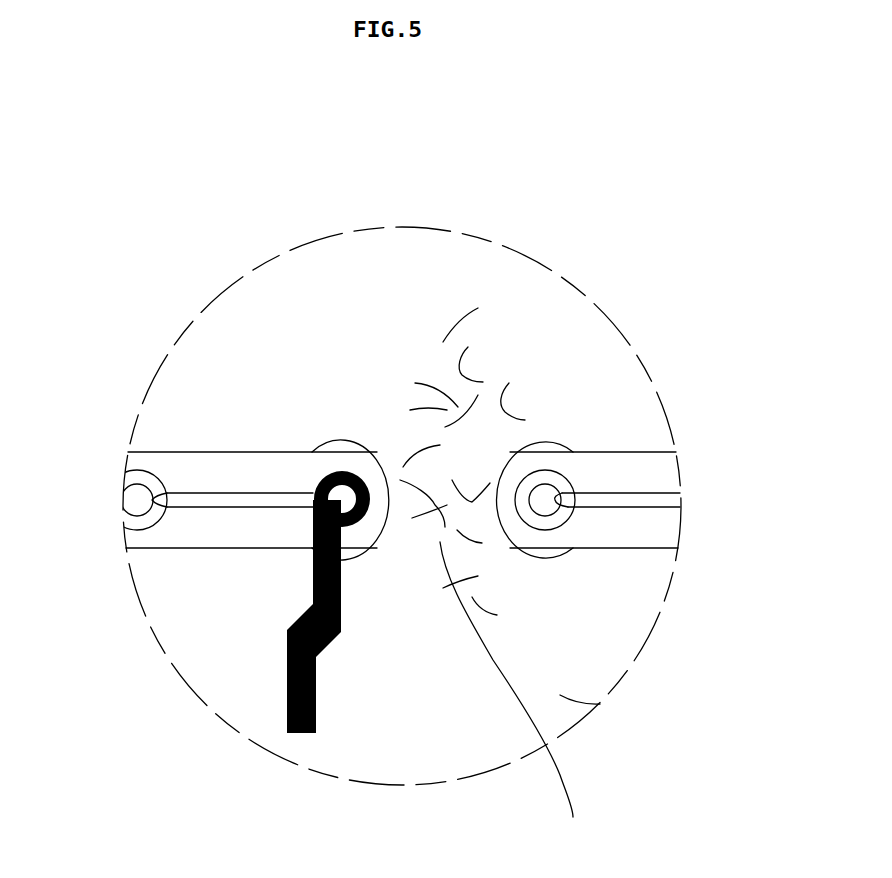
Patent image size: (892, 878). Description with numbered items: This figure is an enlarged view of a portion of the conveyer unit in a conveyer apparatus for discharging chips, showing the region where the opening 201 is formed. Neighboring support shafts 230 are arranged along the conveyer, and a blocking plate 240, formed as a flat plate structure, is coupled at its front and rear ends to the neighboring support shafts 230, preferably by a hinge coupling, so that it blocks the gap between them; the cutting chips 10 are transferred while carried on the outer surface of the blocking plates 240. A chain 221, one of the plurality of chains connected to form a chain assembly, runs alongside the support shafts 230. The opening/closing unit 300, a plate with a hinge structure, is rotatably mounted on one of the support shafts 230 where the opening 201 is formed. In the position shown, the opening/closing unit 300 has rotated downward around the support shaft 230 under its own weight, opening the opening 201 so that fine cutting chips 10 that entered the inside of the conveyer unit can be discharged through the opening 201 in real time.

The cutting chips 10 is at (474, 309).
The blocking plate 240 is at (243, 467).
The support shaft 230 is at (342, 499).
The chain 221 is at (140, 548).
The opening/closing unit 300 is at (352, 648).
The opening 201 is at (521, 702).